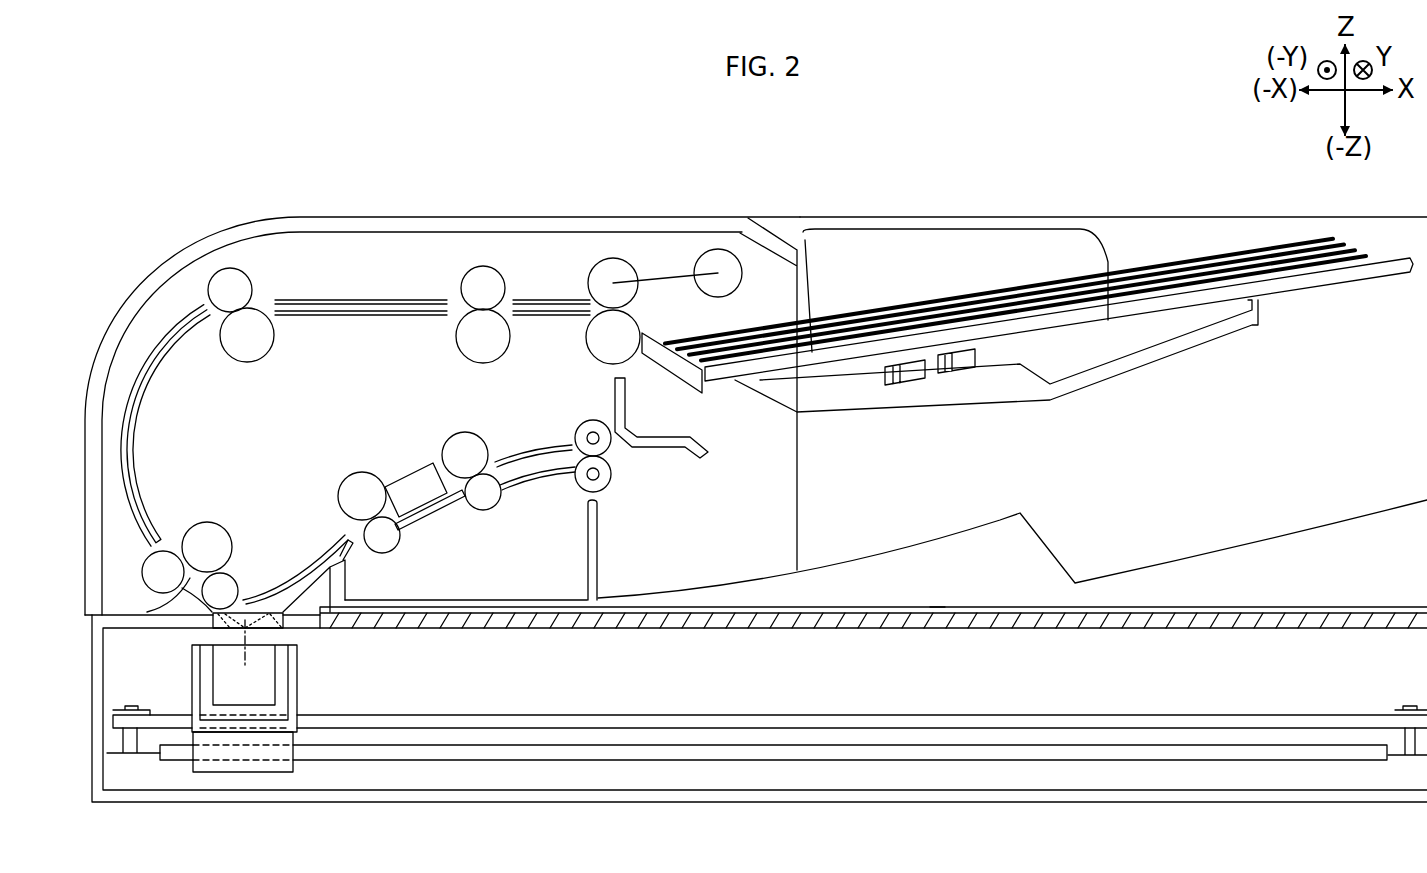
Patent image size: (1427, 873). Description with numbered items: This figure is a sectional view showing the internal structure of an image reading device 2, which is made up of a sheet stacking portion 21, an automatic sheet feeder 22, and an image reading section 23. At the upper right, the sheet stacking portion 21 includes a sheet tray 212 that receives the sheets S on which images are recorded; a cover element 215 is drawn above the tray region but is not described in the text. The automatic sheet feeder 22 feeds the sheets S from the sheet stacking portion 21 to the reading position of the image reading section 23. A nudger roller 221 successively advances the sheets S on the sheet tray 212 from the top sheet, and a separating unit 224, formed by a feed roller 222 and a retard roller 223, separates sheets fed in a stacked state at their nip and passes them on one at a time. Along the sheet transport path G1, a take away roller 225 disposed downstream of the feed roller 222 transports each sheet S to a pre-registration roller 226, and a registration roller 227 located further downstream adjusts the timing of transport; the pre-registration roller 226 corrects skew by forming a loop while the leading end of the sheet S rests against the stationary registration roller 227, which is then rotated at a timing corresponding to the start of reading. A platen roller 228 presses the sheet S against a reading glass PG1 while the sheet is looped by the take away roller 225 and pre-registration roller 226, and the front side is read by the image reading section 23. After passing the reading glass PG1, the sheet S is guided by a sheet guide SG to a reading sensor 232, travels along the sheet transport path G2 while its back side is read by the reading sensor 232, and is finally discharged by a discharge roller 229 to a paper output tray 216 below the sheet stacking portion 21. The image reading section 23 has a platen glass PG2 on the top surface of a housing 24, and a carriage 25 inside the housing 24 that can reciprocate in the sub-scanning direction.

The image reading device 2 is at (158, 232).
The sheet stacking portion 21 is at (952, 214).
The feed tray cover 215 is at (927, 262).
The sheet S is at (1108, 320).
The sheet tray 212 is at (1143, 310).
The paper output tray 216 is at (1215, 575).
The automatic sheet feeder 22 is at (394, 377).
The nudger roller 221 is at (718, 273).
The feed roller 222 is at (613, 283).
The retard roller 223 is at (611, 333).
The separating unit 224 is at (583, 277).
The take away roller 225 is at (458, 273).
The pre-registration roller 226 is at (258, 280).
The registration roller 227 is at (180, 522).
The platen roller 228 is at (220, 591).
The discharge roller 229 is at (573, 469).
The reading sensor 232 is at (427, 482).
The sheet transport path G1 is at (420, 302).
The sheet transport path G2 is at (548, 455).
The sheet guide SG is at (318, 598).
The reading glass PG1 is at (228, 622).
The platen glass PG2 is at (947, 620).
The image reading section 23 is at (745, 680).
The housing 24 is at (433, 792).
The carriage 25 is at (293, 692).